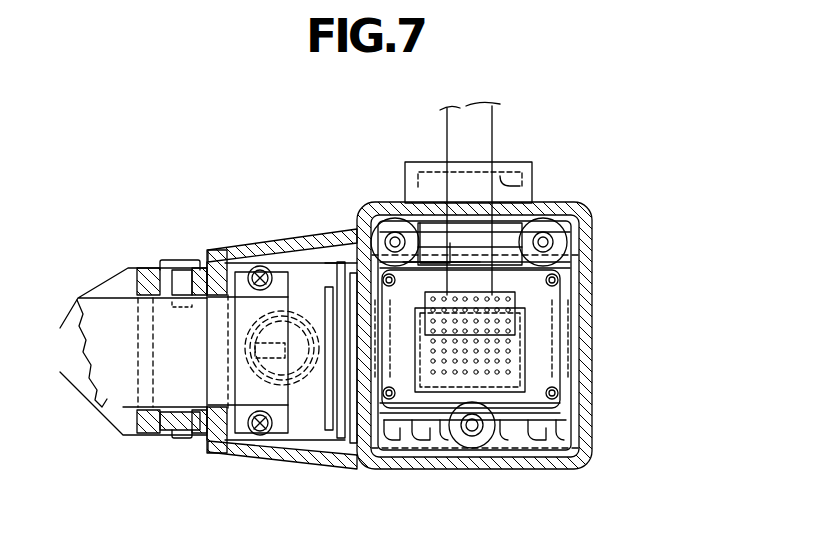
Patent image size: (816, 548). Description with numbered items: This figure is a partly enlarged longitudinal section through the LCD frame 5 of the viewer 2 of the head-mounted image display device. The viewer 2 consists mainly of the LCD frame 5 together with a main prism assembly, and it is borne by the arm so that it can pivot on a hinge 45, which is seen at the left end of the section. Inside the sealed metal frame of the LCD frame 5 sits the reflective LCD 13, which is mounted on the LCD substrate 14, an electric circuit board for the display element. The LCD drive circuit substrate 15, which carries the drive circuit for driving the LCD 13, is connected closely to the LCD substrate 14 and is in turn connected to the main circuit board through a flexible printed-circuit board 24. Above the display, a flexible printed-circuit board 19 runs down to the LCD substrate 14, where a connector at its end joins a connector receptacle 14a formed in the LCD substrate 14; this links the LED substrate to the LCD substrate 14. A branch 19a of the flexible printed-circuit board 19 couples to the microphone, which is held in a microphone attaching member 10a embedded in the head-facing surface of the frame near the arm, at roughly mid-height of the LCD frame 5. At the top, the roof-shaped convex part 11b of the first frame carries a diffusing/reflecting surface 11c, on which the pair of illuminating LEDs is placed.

The viewer 2 is at (349, 184).
The LCD frame 5 is at (330, 227).
The microphone attaching member 10a is at (278, 333).
The roof-shaped convex part 11b is at (511, 163).
The diffusing/reflecting surface 11c is at (523, 181).
The reflective LCD 13 is at (517, 378).
The LCD substrate 14 is at (535, 348).
The connector receptacle 14a is at (517, 300).
The LCD drive circuit substrate 15 is at (333, 405).
The flexible printed-circuit board 19 is at (478, 144).
The branch 19a is at (430, 272).
The flexible printed-circuit board 24 is at (108, 314).
The hinge 45 is at (177, 262).